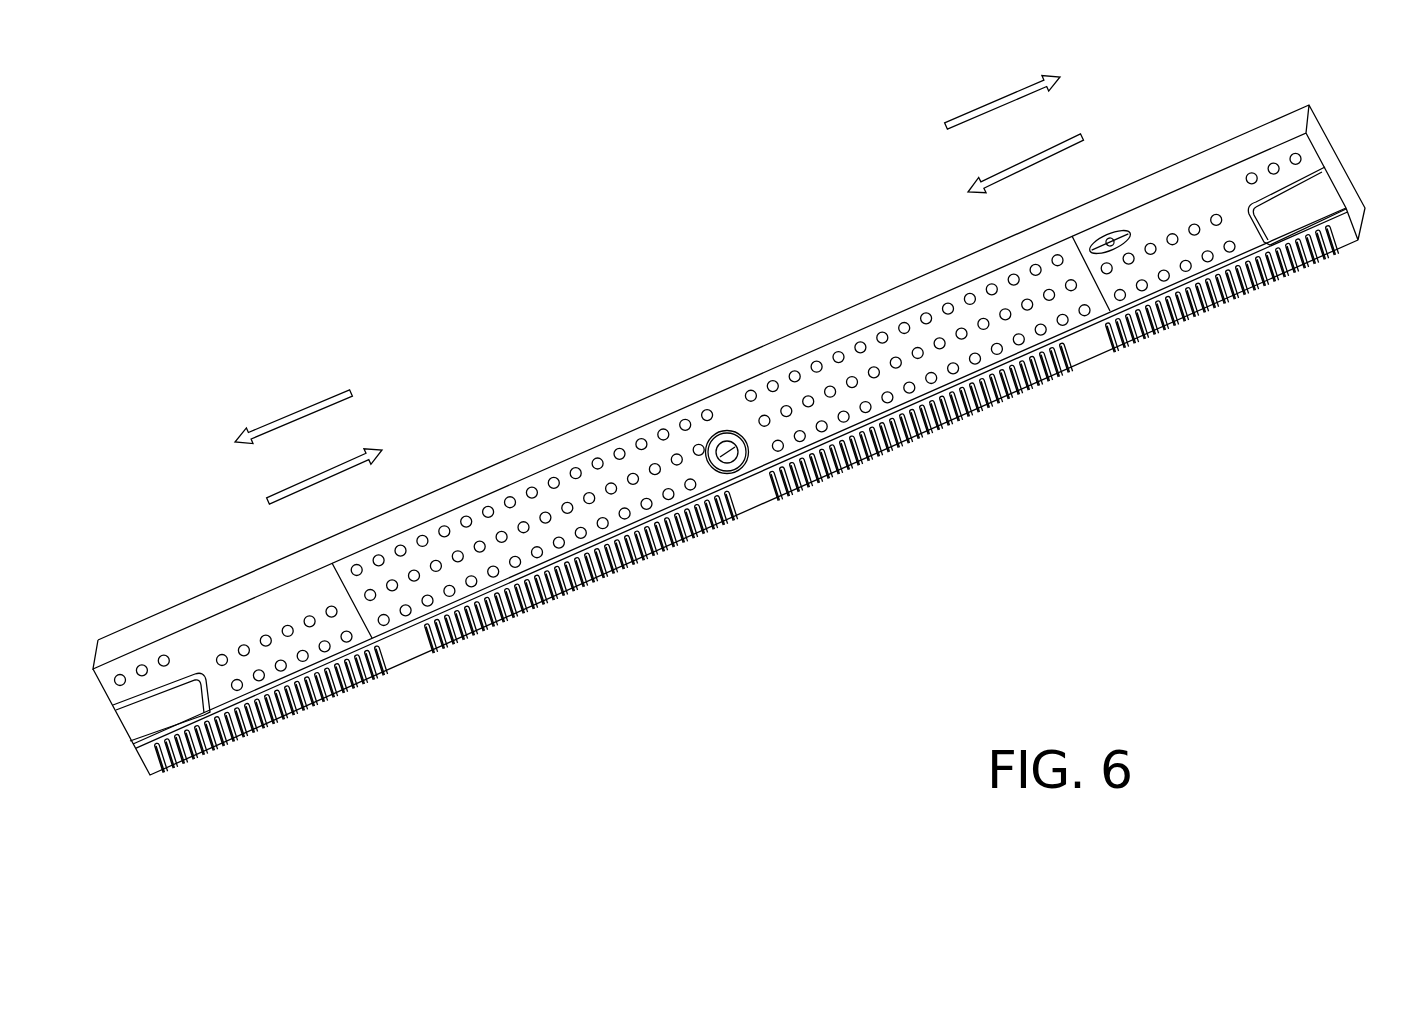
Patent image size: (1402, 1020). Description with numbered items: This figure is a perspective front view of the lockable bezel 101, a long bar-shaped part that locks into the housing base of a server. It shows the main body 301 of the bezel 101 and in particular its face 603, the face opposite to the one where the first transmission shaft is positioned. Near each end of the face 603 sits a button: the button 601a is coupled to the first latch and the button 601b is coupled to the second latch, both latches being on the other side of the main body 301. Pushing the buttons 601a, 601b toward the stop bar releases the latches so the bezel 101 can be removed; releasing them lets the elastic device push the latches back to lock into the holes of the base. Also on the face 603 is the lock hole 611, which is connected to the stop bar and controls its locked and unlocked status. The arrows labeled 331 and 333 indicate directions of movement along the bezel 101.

The lockable bezel 101 is at (263, 188).
The main body 301 is at (693, 392).
The first sliding direction 331 is at (675, 310).
The second sliding direction 333 is at (647, 249).
The button 601a is at (1318, 200).
The button 601b is at (135, 716).
The face of the main body 603 is at (1125, 179).
The lock hole 611 is at (732, 468).